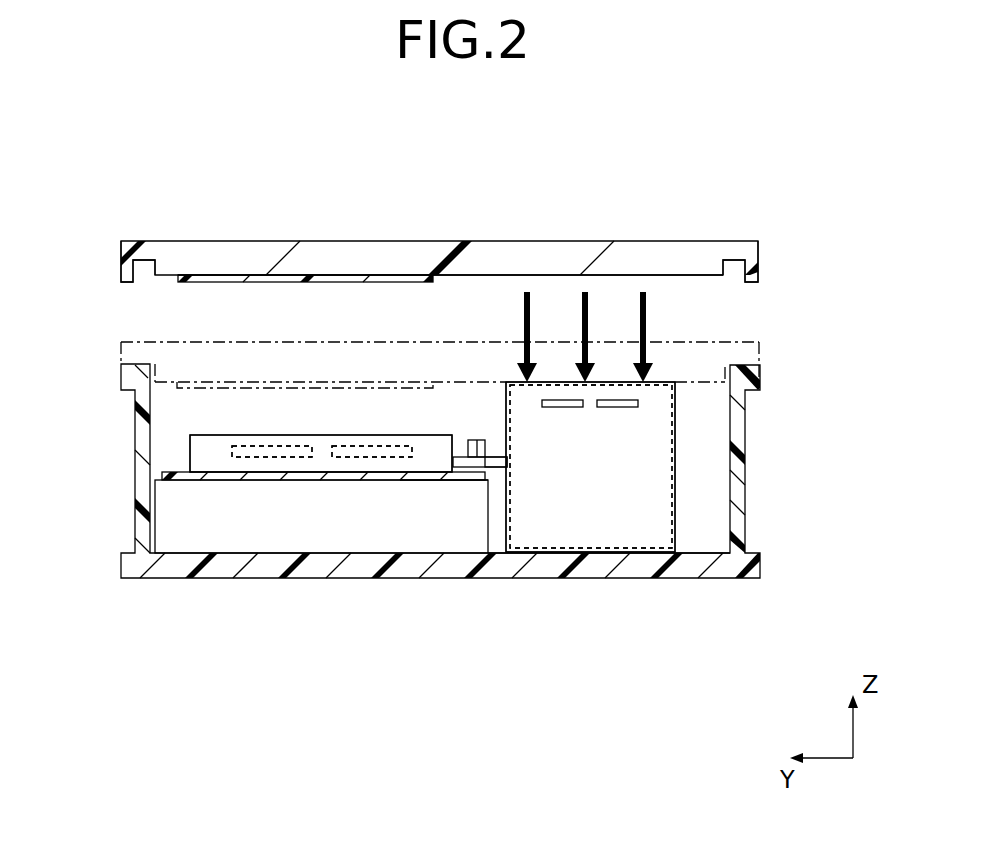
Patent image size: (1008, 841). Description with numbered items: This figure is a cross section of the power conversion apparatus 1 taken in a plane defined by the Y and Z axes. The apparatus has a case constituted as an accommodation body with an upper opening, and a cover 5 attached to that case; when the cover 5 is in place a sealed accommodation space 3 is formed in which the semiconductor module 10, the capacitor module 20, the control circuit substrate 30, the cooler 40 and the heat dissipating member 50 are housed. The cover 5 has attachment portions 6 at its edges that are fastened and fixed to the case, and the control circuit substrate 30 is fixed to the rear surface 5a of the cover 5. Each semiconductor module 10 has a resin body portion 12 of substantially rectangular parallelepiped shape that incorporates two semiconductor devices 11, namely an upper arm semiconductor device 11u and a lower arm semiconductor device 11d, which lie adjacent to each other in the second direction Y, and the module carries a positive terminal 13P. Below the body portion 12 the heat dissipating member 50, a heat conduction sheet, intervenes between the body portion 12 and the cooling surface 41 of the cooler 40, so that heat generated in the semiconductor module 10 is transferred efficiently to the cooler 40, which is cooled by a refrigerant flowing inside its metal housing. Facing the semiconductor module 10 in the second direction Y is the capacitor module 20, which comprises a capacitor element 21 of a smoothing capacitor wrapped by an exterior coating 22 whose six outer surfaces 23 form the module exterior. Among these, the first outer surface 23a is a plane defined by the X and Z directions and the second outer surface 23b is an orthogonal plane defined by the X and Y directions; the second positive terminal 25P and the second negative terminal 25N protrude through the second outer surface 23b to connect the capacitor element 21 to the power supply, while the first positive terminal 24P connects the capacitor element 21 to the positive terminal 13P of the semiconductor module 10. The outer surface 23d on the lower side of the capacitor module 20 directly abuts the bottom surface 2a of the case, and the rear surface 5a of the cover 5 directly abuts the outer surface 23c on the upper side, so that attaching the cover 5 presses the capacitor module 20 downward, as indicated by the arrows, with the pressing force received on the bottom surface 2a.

The power conversion apparatus 1 is at (392, 193).
The bottom surface 2a is at (690, 554).
The accommodation space 3 is at (221, 399).
The cover 5 is at (680, 240).
The rear surface 5a is at (607, 278).
The attachment portion 6 is at (120, 276).
The semiconductor module 10 is at (207, 433).
The semiconductor device 11 is at (322, 451).
The upper arm semiconductor device 11u is at (253, 457).
The lower arm semiconductor device 11d is at (362, 457).
The body portion 12 is at (200, 452).
The positive terminal 13P is at (472, 460).
The capacitor module 20 is at (690, 503).
The capacitor element 21 is at (577, 523).
The exterior coating 22 is at (682, 470).
The outer surfaces 23 is at (591, 466).
The first outer surface 23a is at (505, 418).
The second outer surface 23b is at (535, 528).
The outer surface on upper side 23c is at (660, 382).
The outer surface on lower side 23d is at (645, 553).
The first positive terminal 24P is at (497, 461).
The second negative terminal 25N is at (615, 408).
The second positive terminal 25P is at (565, 408).
The control circuit substrate 30 is at (192, 284).
The cooler 40 is at (153, 521).
The cooling surface 41 is at (420, 480).
The heat dissipating member 50 is at (163, 477).